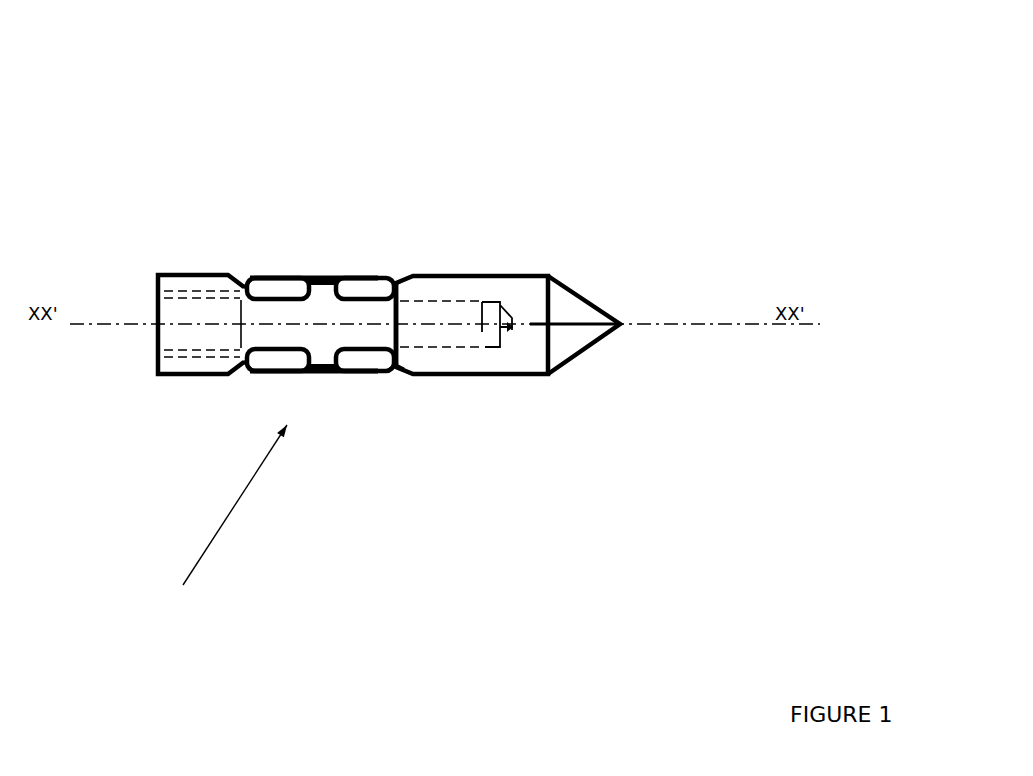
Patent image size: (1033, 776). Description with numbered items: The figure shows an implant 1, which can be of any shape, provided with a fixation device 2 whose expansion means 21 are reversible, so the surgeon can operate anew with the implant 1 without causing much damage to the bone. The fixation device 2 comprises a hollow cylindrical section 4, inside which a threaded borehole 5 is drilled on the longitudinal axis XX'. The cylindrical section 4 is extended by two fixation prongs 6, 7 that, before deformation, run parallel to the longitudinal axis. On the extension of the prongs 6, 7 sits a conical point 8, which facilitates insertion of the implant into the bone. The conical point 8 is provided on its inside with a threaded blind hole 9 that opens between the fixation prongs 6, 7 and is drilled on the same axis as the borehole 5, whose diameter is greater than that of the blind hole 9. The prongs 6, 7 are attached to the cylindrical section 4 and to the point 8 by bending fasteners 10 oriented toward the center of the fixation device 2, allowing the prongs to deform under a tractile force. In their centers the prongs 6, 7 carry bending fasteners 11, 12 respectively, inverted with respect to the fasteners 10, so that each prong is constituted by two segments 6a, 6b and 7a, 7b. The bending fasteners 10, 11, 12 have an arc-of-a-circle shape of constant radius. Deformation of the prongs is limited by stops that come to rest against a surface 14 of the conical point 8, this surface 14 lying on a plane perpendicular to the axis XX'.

The implant 1 is at (565, 200).
The fixation device 2 is at (360, 180).
The hollow cylindrical section 4 is at (198, 273).
The threaded borehole 5 is at (170, 350).
The fixation prong 6 is at (362, 275).
The segment of prong 6a is at (288, 288).
The segment of prong 6b is at (350, 275).
The fixation prong 7 is at (345, 373).
The segment of prong 7a is at (262, 372).
The segment of prong 7b is at (363, 373).
The conical point 8 is at (560, 300).
The threaded blind hole 9 is at (467, 345).
The bending fasteners 10 is at (248, 283).
The bending fastener 11 is at (333, 283).
The bending fastener 12 is at (322, 377).
The surface of the conical point 14 is at (402, 320).
The expansion means 21 is at (219, 520).